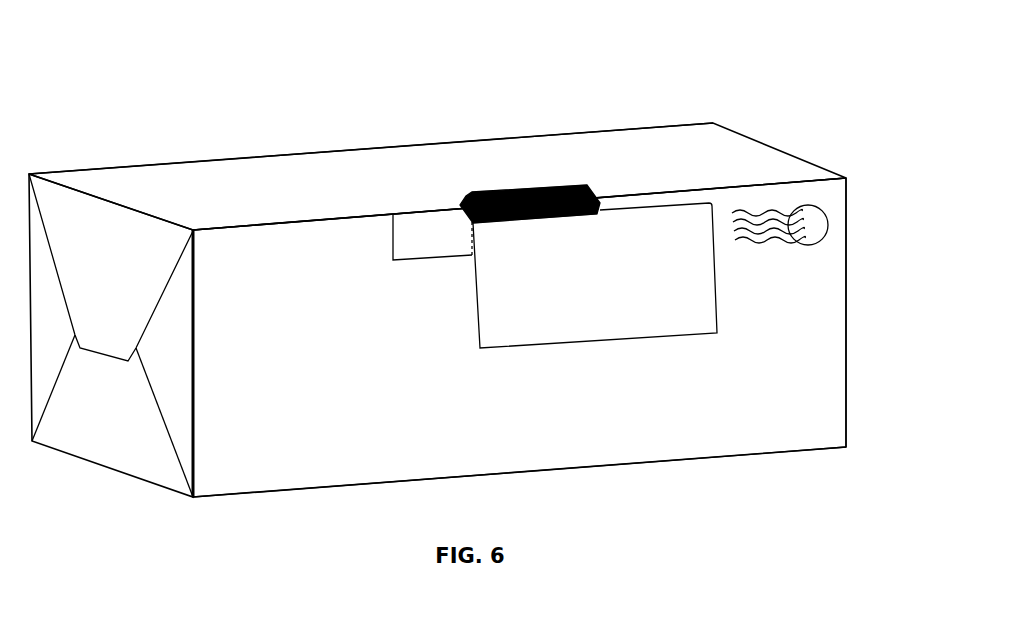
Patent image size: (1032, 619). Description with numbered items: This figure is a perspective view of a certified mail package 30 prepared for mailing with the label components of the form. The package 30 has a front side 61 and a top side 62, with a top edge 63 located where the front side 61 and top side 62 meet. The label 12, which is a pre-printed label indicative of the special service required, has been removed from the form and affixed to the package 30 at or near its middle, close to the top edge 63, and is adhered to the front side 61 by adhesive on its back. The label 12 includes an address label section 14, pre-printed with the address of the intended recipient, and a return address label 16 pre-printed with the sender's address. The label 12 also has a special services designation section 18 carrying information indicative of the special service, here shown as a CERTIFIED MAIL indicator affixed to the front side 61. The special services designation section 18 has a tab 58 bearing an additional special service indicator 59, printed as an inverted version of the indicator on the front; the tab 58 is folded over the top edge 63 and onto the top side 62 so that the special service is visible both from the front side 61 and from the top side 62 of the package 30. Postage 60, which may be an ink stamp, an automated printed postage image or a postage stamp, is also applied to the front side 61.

The label 12 is at (716, 208).
The address label section 14 is at (643, 283).
The return address label 16 is at (413, 228).
The special services designation section 18 is at (460, 197).
The certified mail package 30 is at (876, 222).
The tab 58 is at (502, 190).
The additional special service indicator 59 is at (542, 190).
The postage 60 is at (815, 215).
The front side 61 is at (783, 398).
The top side 62 is at (593, 152).
The top edge 63 is at (662, 193).